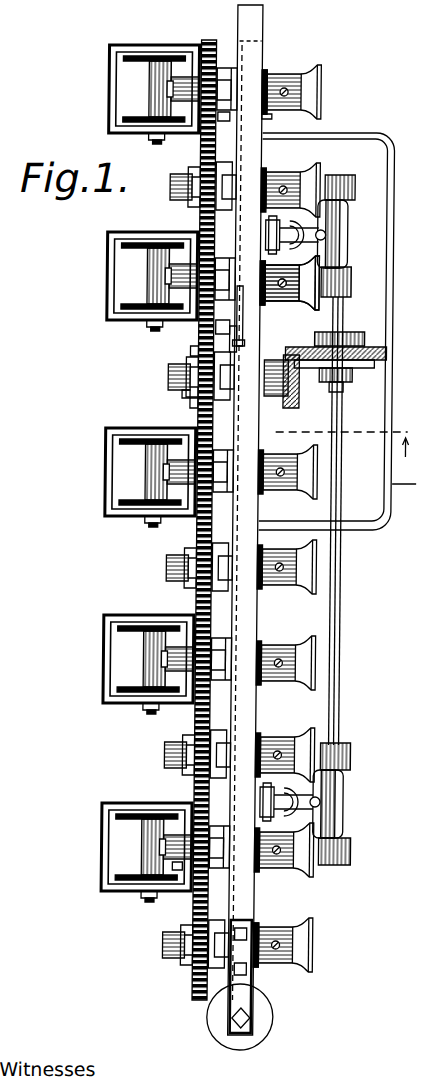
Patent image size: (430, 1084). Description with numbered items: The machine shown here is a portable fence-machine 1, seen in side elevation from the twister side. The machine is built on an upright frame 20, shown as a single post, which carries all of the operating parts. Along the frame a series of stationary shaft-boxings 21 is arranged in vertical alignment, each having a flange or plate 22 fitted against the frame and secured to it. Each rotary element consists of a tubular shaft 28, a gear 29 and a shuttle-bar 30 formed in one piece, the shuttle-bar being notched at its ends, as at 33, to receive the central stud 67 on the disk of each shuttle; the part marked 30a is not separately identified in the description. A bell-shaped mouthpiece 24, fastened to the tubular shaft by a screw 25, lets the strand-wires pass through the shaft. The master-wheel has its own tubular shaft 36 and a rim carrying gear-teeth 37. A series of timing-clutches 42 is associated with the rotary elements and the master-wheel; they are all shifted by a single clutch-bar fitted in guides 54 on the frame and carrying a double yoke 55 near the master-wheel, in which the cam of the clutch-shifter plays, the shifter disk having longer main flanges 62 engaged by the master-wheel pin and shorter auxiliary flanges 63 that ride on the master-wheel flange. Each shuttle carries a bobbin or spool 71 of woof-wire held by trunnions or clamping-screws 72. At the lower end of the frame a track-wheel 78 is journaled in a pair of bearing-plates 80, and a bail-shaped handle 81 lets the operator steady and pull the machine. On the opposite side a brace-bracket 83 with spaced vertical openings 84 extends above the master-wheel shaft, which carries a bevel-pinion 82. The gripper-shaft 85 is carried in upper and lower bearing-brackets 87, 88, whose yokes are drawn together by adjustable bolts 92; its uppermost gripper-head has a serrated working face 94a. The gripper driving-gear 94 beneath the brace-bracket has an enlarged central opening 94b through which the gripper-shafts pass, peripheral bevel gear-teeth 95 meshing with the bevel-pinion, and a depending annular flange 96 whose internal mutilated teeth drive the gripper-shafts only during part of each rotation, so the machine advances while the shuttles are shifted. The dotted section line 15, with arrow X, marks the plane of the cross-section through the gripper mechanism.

The machine 1 is at (414, 432).
The section line 15 is at (333, 432).
The frame 20 is at (263, 18).
The shaft-boxing 21 is at (276, 105).
The flange or plate 22 is at (267, 70).
The bell-shaped mouthpiece 24 is at (314, 84).
The screw 25 is at (291, 470).
The tubular shaft 28 is at (173, 190).
The gear 29 is at (206, 40).
The shuttle-bar 30 is at (192, 916).
The pinion 30a is at (178, 401).
The notch 33 is at (226, 128).
The tubular shaft 36 is at (172, 372).
The gear-teeth 37 is at (196, 350).
The timing-clutch 42 is at (228, 66).
The guide 54 is at (262, 41).
The double yoke 55 is at (241, 344).
The main flange 62 is at (246, 312).
The auxiliary flange 63 is at (224, 322).
The central stud 67 is at (187, 868).
The bobbin or spool 71 is at (134, 56).
The trunnions or clamping-screws 72 is at (166, 141).
The track-wheel 78 is at (276, 1013).
The bearing-plate 80 is at (258, 984).
The handle 81 is at (389, 242).
The bevel-pinion 82 is at (292, 408).
The brace-bracket 83 is at (287, 330).
The vertical openings 84 is at (345, 333).
The gripper-shaft 85 is at (343, 483).
The upper bearing-bracket 87 is at (333, 222).
The lower bearing-bracket 88 is at (318, 783).
The adjustable bolt 92 is at (340, 238).
The gripper driving-gear 94 is at (390, 351).
The serrated working face 94a is at (345, 176).
The enlarged central opening 94b is at (368, 341).
The bevel gear-teeth 95 is at (380, 360).
The depending annular flange 96 is at (358, 375).